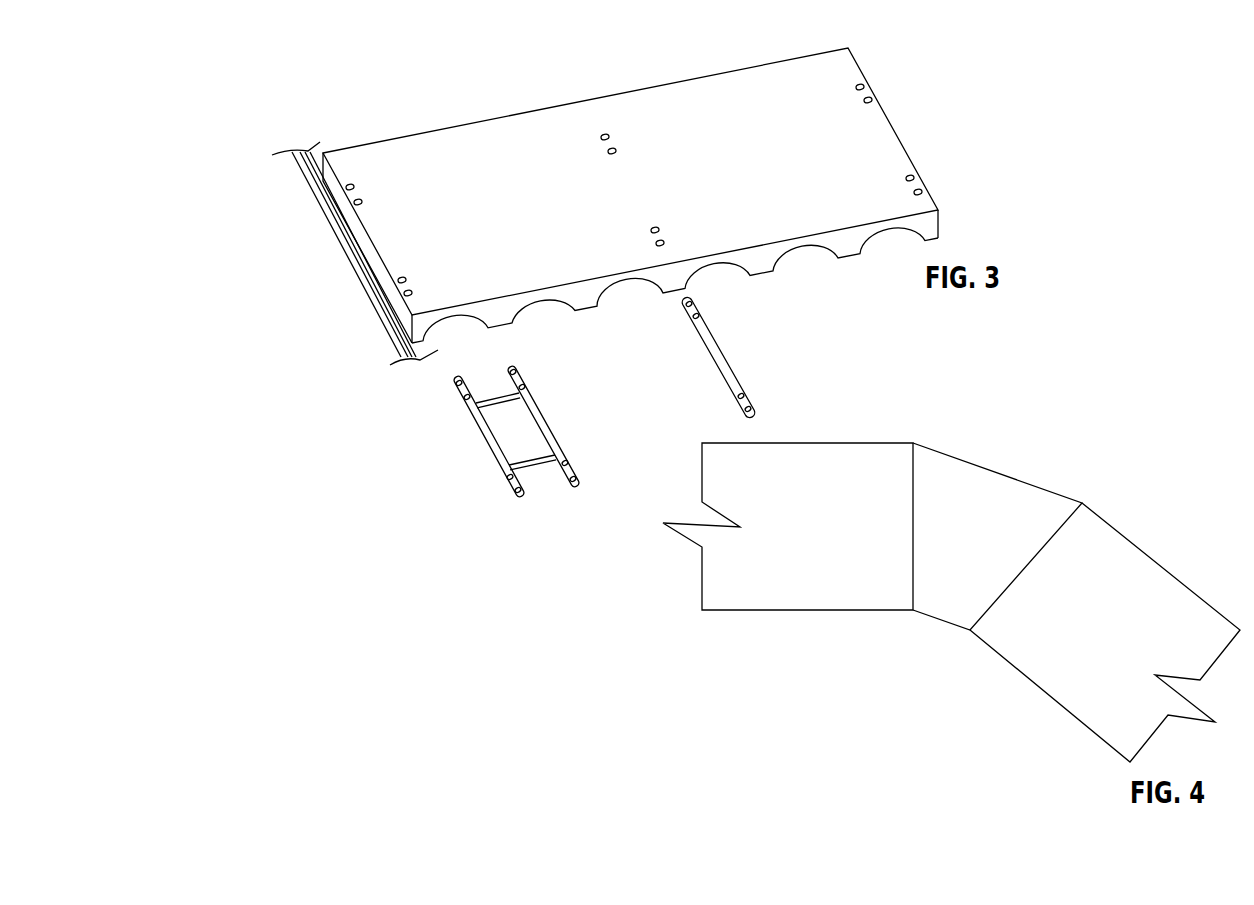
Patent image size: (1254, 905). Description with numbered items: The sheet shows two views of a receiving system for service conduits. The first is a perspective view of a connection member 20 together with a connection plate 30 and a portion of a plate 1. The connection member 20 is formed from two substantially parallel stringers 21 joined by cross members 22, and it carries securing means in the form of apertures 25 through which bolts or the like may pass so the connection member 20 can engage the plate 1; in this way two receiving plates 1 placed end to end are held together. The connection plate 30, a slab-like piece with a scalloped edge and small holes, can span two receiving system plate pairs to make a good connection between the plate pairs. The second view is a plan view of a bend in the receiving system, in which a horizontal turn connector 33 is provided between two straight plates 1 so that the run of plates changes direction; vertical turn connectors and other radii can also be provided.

In FIG. 3, the plate 1 is at (300, 171).
In FIG. 4, the plate 1 is at (840, 593).
In FIG. 3, the connection member 20 is at (569, 423).
In FIG. 3, the stringer 21 is at (527, 375).
In FIG. 3, the cross member 22 is at (500, 403).
In FIG. 3, the aperture 25 is at (457, 383).
In FIG. 3, the connection plate 30 is at (498, 148).
In FIG. 4, the horizontal turn connector 33 is at (963, 602).